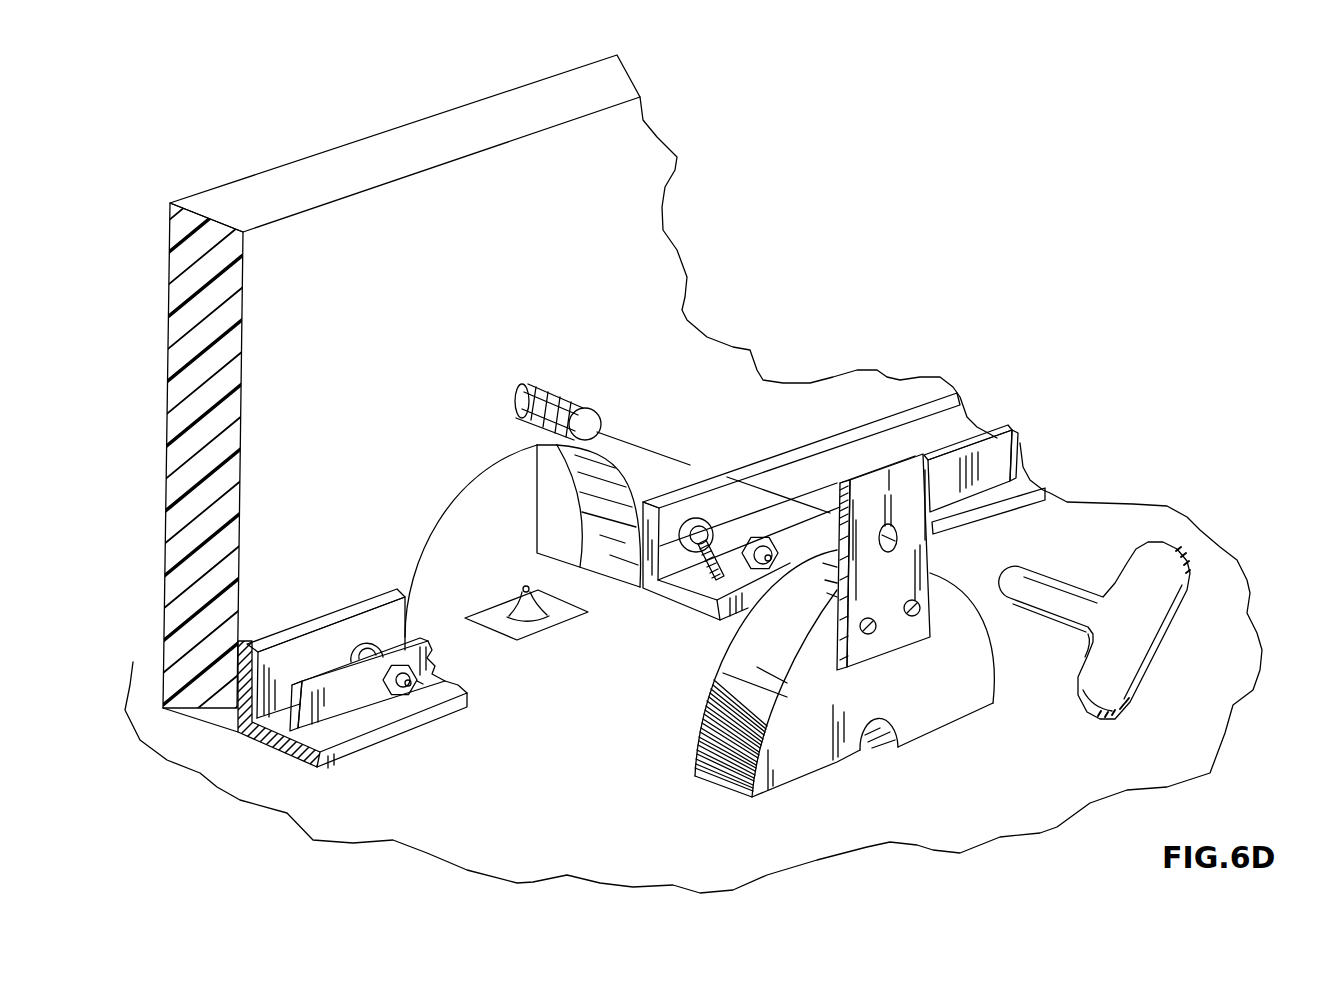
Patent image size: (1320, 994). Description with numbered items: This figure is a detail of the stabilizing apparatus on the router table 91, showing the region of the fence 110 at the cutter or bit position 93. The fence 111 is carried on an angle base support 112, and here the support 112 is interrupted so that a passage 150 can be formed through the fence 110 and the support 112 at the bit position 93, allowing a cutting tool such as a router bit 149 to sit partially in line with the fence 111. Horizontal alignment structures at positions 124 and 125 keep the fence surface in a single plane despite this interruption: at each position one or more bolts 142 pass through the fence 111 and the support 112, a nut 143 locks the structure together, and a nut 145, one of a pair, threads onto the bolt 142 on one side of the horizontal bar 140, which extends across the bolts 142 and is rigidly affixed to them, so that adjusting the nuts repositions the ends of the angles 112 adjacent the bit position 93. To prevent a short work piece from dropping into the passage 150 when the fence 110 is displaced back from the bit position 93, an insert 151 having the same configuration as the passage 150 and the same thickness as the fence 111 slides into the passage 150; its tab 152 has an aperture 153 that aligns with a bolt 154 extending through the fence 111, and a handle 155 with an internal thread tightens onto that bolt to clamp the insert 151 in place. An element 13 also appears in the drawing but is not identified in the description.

The block 13 is at (545, 532).
The table 91 is at (1232, 572).
The cutter or bit position 93 is at (536, 586).
The fence 110 is at (380, 428).
The fence 111 is at (178, 302).
The angle base support 112 is at (275, 752).
The horizontal alignment structure 124 is at (394, 585).
The horizontal alignment structure 125 is at (723, 463).
The horizontal bar 140 is at (1018, 450).
The bolt 142 is at (710, 549).
The nut 143 is at (695, 515).
The nut 145 is at (779, 540).
The router bit 149 is at (530, 612).
The passage 150 is at (455, 636).
The insert 151 is at (715, 712).
The tab 152 is at (918, 622).
The aperture 153 is at (898, 541).
The bolt 154 is at (580, 410).
The handle 155 is at (1092, 593).